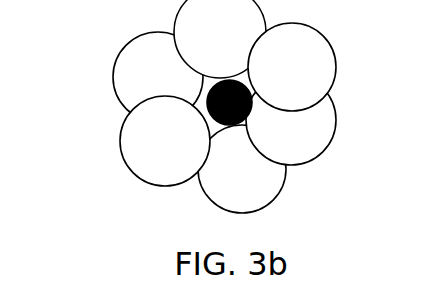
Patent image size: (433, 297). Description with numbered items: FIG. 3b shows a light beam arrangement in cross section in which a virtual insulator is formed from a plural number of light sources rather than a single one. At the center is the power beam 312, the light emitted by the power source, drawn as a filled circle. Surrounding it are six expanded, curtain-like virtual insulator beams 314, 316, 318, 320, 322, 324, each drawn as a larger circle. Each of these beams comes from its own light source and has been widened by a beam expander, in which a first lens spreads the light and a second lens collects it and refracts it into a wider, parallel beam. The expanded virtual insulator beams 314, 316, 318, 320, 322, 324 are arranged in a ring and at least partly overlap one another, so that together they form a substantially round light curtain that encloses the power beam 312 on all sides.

The power beam 312 is at (212, 117).
The virtual insulator beam 314 is at (220, 39).
The virtual insulator beam 316 is at (292, 67).
The virtual insulator beam 318 is at (291, 120).
The virtual insulator beam 320 is at (242, 169).
The virtual insulator beam 322 is at (165, 141).
The virtual insulator beam 324 is at (158, 77).